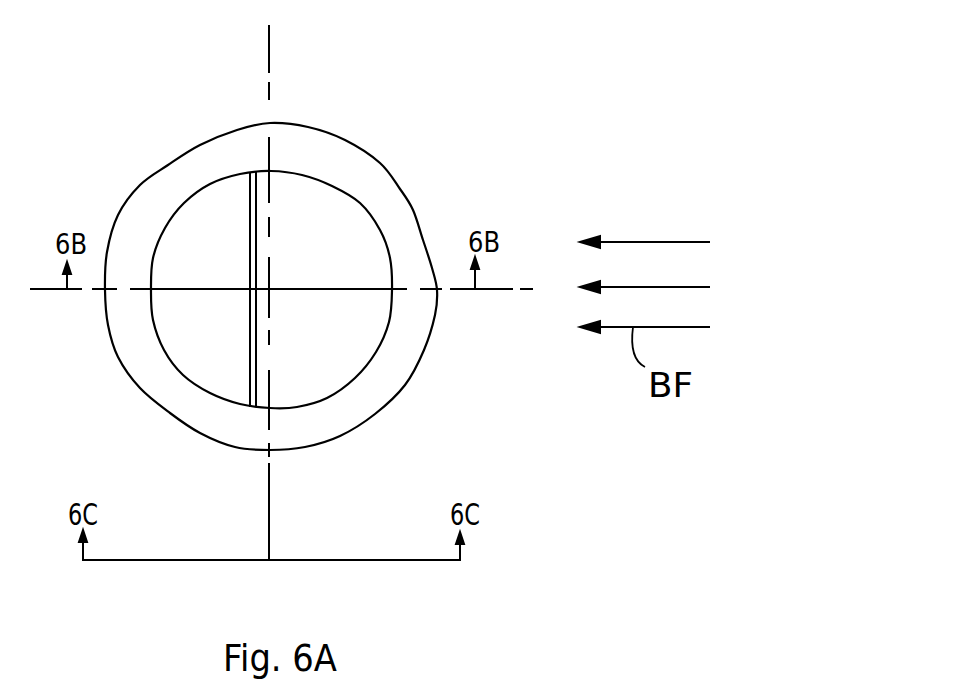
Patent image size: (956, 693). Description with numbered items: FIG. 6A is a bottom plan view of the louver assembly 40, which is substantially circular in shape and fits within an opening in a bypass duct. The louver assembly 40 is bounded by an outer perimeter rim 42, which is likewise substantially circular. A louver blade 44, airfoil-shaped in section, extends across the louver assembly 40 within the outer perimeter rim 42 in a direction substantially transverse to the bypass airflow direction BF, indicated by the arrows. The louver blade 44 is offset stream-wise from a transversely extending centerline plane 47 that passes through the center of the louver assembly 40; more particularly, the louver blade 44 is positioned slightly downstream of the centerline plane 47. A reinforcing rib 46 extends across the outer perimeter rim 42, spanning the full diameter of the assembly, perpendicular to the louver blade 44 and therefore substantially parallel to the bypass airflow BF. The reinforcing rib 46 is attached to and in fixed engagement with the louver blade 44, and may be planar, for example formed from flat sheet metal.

The louver assembly 40 is at (403, 144).
The outer perimeter rim 42 is at (402, 228).
The louver blade 44 is at (253, 225).
The reinforcing rib 46 is at (343, 290).
The centerline plane 47 is at (269, 50).